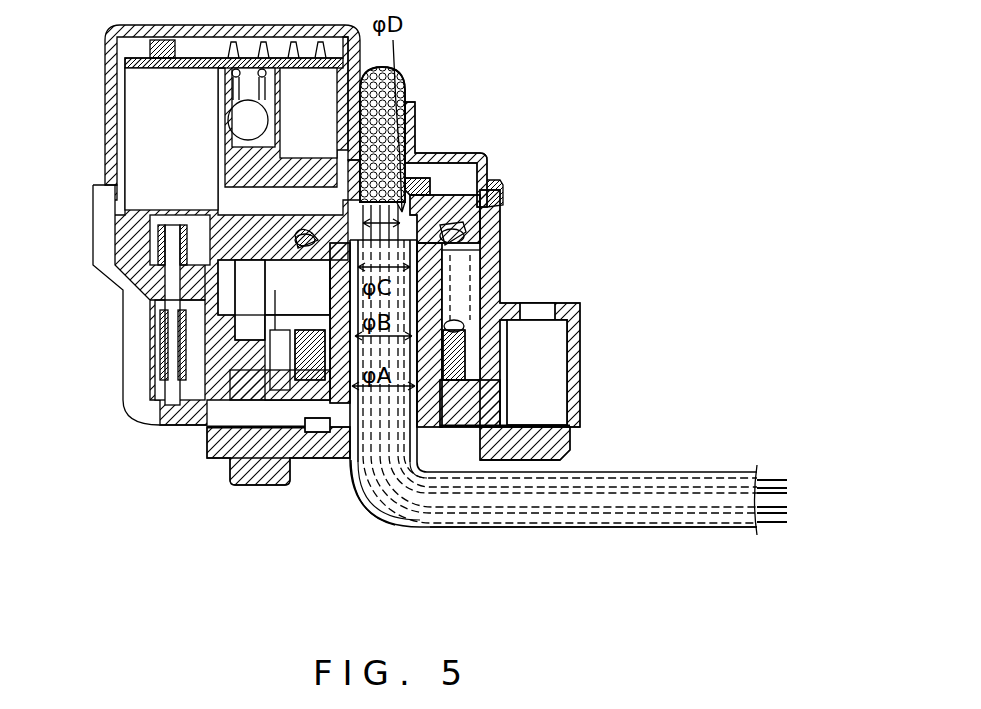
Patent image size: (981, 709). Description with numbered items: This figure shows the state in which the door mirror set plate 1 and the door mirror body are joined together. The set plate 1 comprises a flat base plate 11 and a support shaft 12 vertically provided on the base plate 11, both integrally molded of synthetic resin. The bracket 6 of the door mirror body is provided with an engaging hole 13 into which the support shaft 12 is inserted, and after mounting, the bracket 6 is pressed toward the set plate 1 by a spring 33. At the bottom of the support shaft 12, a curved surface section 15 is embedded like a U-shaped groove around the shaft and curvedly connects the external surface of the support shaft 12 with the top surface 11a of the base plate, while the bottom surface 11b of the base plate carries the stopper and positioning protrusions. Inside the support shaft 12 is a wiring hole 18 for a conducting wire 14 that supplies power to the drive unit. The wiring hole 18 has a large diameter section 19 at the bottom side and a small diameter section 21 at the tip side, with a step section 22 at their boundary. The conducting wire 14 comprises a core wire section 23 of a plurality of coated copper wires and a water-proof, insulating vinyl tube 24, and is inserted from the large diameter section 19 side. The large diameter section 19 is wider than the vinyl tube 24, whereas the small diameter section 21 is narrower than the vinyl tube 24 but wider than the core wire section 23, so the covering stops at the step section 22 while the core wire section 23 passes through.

The set plate 1 is at (205, 448).
The bracket 6 is at (132, 393).
The base plate 11 is at (560, 443).
The top surface 11a is at (537, 413).
The bottom surface 11b is at (514, 462).
The support shaft 12 is at (500, 395).
The engaging hole 13 is at (358, 470).
The conducting wire 14 is at (697, 470).
The curved surface section 15 is at (320, 432).
The wiring hole 18 is at (352, 462).
The large diameter section 19 is at (408, 462).
The small diameter section 21 is at (410, 217).
The step section 22 is at (450, 238).
The core wire section 23 is at (402, 213).
The vinyl tube 24 is at (670, 527).
The spring 33 is at (297, 330).